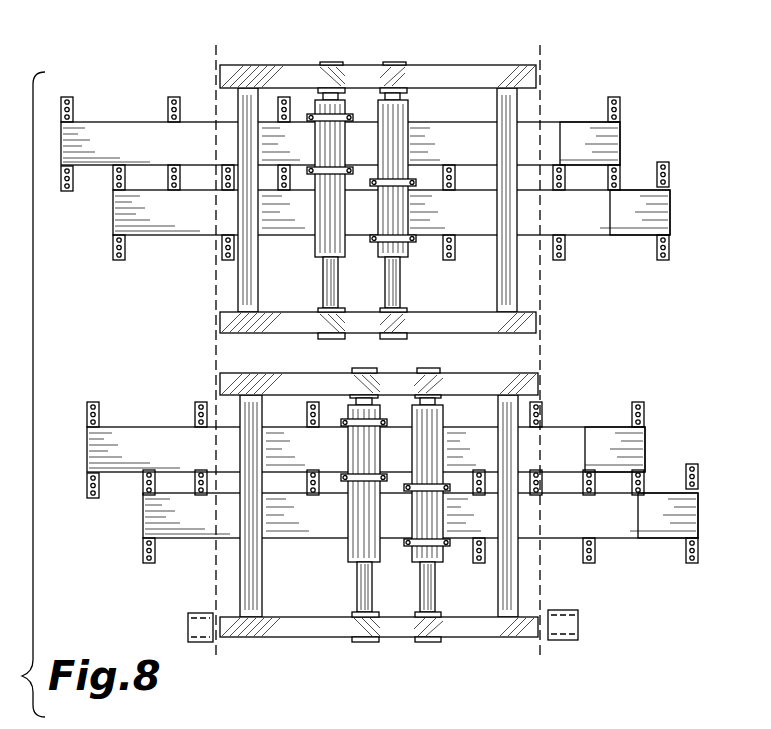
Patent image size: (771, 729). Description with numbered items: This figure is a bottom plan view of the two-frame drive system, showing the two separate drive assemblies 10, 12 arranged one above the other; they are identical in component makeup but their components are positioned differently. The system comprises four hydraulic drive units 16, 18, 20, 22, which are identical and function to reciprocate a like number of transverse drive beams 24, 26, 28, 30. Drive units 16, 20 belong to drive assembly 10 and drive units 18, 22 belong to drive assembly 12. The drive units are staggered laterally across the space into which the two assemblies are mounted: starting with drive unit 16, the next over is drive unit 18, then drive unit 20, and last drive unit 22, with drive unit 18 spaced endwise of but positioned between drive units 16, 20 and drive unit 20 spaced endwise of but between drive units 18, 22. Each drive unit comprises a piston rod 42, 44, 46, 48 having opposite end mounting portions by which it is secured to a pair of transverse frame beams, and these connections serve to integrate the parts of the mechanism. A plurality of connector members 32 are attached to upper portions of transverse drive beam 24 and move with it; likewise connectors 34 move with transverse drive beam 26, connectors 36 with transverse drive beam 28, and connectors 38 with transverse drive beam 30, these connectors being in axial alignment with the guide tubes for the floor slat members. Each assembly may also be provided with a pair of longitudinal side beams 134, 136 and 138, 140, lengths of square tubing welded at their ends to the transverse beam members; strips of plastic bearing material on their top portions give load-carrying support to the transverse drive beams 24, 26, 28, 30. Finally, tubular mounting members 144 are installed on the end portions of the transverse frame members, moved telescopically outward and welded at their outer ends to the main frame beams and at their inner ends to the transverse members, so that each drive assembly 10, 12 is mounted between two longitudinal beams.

The drive assembly 10 is at (446, 52).
The drive assembly 12 is at (320, 652).
The hydraulic drive unit 16 is at (316, 257).
The hydraulic drive unit 18 is at (348, 562).
The hydraulic drive unit 20 is at (405, 262).
The hydraulic drive unit 22 is at (440, 562).
The transverse drive beam 24 is at (478, 147).
The transverse drive beam 26 is at (329, 456).
The transverse drive beam 28 is at (474, 219).
The transverse drive beam 30 is at (329, 526).
The connector 32 is at (620, 110).
The connector 34 is at (645, 412).
The connector 36 is at (670, 180).
The connector 38 is at (698, 472).
The piston rod 42 is at (323, 300).
The piston rod 44 is at (357, 600).
The piston rod 46 is at (402, 300).
The piston rod 48 is at (435, 601).
The longitudinal side beam 134 is at (243, 291).
The longitudinal side beam 136 is at (510, 292).
The longitudinal side beam 138 is at (245, 578).
The longitudinal side beam 140 is at (512, 588).
The tubular mounting member 144 is at (188, 628).